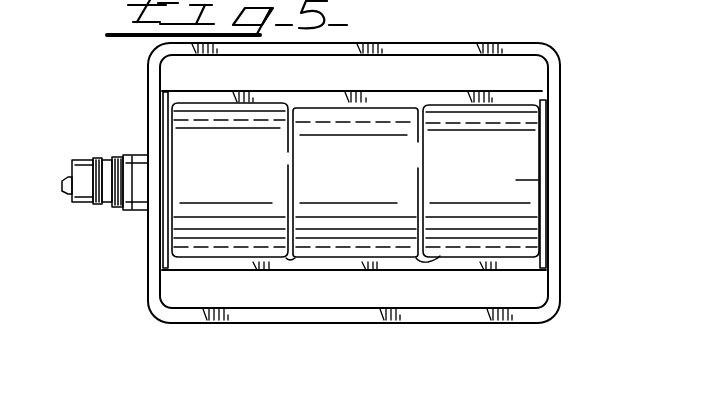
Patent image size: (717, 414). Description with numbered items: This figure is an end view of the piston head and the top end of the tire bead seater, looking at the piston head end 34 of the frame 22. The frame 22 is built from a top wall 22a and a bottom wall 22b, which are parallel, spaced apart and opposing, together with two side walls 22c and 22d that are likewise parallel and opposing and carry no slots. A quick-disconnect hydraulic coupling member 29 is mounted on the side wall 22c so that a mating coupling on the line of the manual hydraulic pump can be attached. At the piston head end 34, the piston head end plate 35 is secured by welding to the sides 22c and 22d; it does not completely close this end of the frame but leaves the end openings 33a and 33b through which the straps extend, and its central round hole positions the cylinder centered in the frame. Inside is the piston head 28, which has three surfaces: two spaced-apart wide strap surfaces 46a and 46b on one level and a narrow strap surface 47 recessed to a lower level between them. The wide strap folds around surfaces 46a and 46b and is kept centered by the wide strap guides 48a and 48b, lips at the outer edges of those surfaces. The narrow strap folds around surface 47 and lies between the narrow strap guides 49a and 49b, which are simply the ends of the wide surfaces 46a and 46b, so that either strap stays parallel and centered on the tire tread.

The frame 22 is at (354, 181).
The top wall 22a is at (467, 50).
The bottom wall 22b is at (467, 318).
The side wall 22c is at (155, 114).
The side wall 22d is at (553, 257).
The piston head 28 is at (512, 137).
The quick-disconnect hydraulic coupling member 29 is at (83, 203).
The end opening 33a is at (423, 66).
The end opening 33b is at (529, 292).
The piston head end 34 is at (403, 278).
The piston head end plate 35 is at (500, 97).
The wide strap surface 46a is at (241, 238).
The wide strap surface 46b is at (517, 182).
The narrow strap surface 47 is at (358, 237).
The wide strap guide 48a is at (163, 265).
The wide strap guide 48b is at (547, 143).
The narrow strap guide 49a is at (292, 259).
The narrow strap guide 49b is at (440, 258).